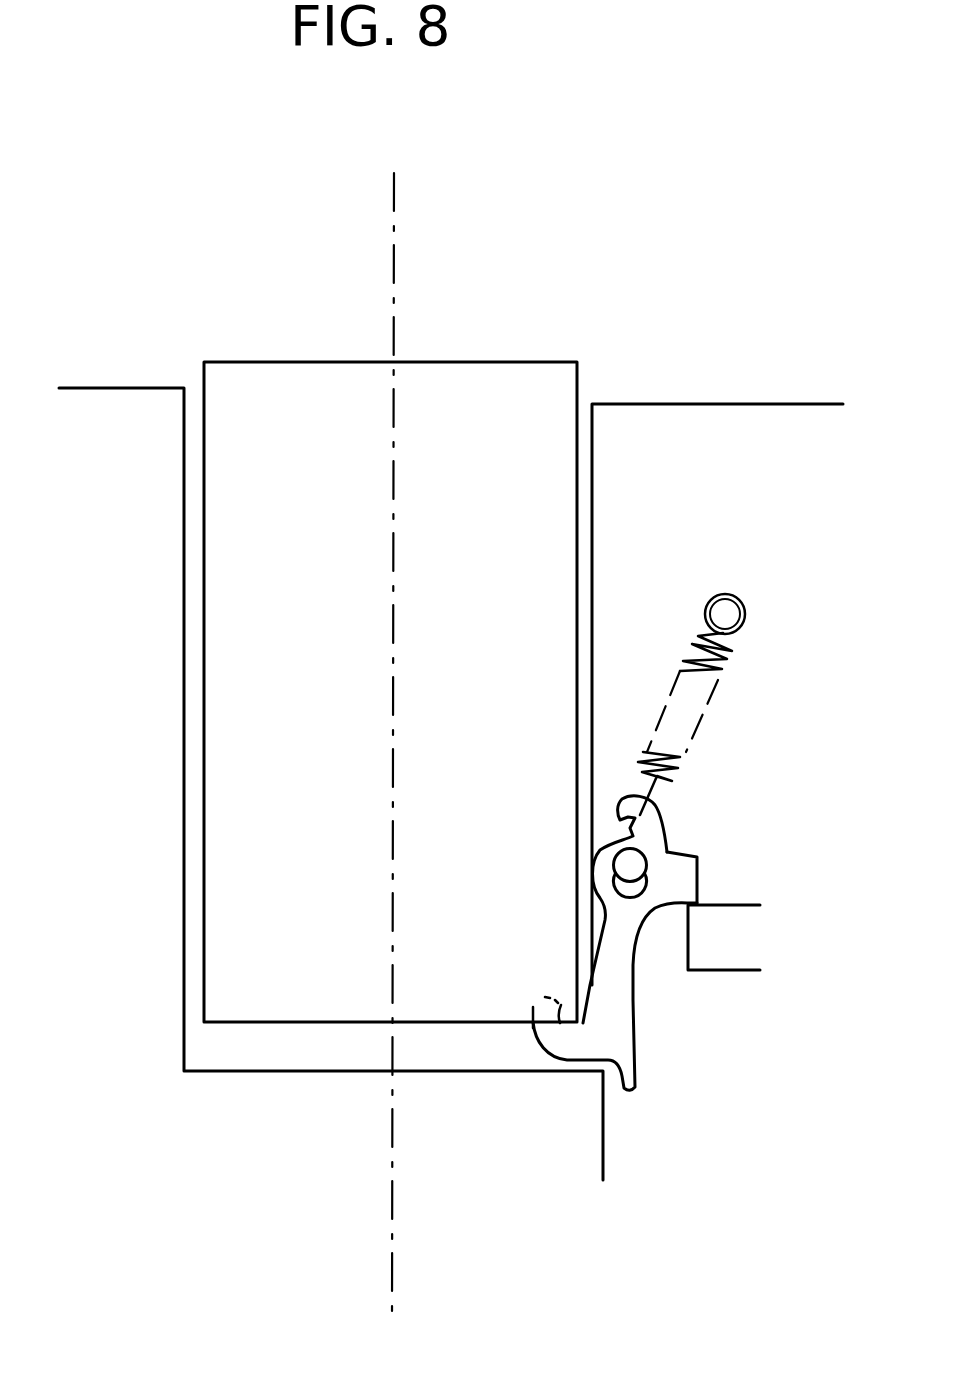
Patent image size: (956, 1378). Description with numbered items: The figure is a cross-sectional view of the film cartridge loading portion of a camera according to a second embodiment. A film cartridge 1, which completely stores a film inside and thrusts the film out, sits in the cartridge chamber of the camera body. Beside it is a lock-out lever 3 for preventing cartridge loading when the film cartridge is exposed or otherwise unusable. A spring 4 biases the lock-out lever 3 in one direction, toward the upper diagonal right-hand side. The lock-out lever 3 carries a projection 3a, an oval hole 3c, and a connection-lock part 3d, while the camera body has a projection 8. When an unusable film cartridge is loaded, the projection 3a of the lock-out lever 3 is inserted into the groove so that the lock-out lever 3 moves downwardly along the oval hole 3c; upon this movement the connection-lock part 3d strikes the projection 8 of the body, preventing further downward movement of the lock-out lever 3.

The film cartridge 1 is at (477, 381).
The lock-out lever 3 is at (616, 977).
The projection 3a is at (545, 1002).
The oval hole 3c is at (636, 853).
The connection-lock part 3d is at (689, 878).
The spring 4 is at (693, 712).
The projection of the camera body 8 is at (750, 957).